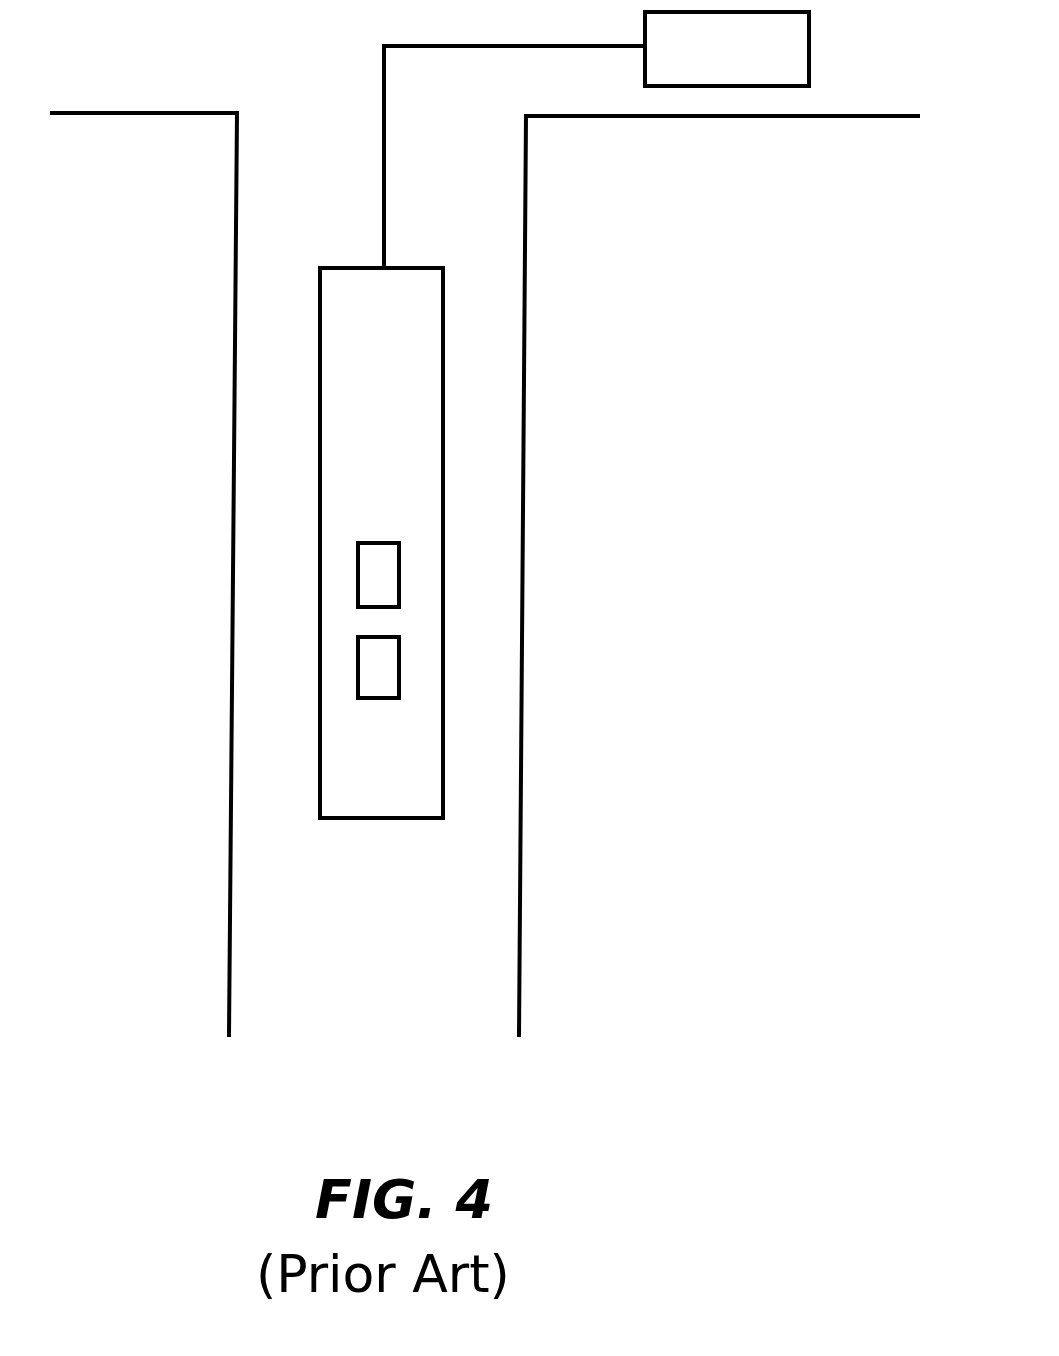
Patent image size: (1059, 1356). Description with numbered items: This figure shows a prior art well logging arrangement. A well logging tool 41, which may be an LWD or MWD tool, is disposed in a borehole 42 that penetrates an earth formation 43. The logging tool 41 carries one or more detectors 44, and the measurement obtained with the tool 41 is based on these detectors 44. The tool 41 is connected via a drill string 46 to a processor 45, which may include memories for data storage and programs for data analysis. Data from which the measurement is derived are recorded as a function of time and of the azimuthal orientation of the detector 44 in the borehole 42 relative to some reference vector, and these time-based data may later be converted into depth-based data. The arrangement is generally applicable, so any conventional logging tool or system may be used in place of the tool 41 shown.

The well logging tool 41 is at (443, 452).
The borehole 42 is at (282, 160).
The earth formation 43 is at (148, 298).
The detector 44 is at (399, 578).
The processor 45 is at (748, 72).
The drill string 46 is at (384, 212).